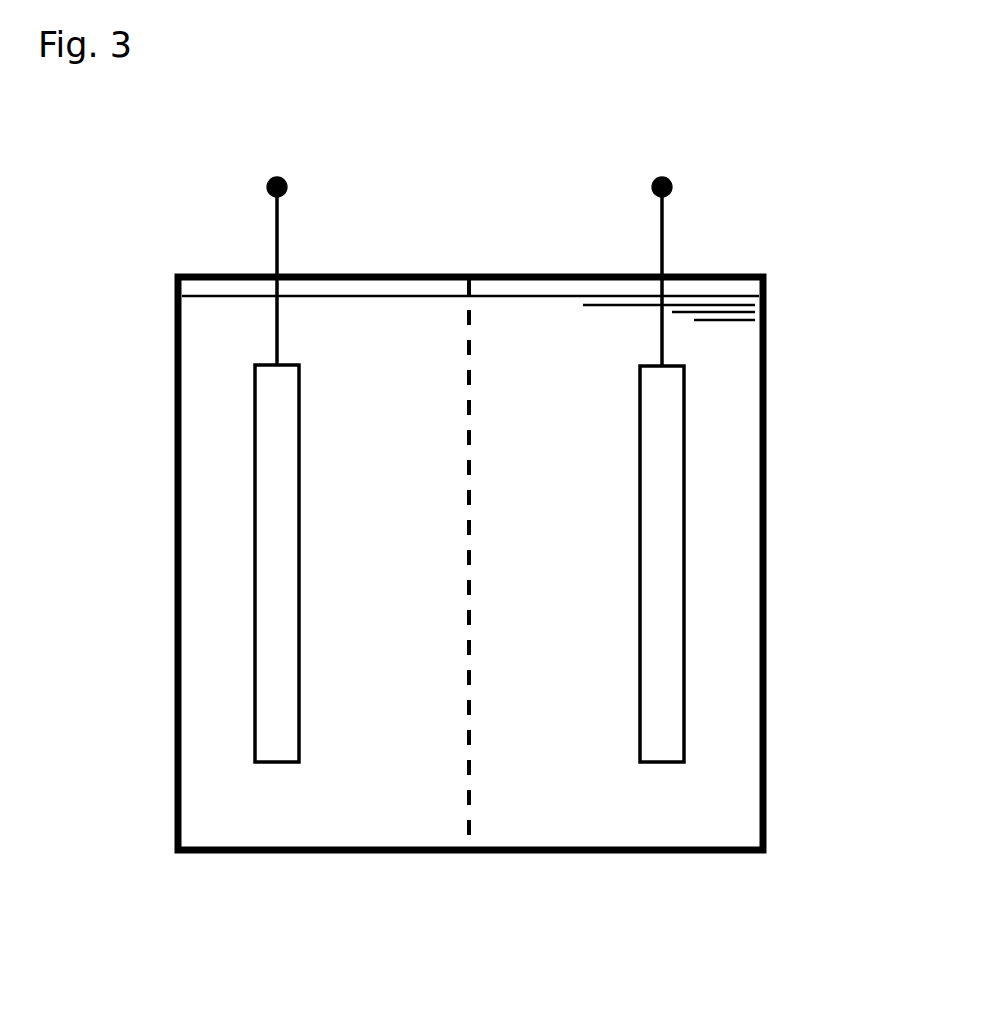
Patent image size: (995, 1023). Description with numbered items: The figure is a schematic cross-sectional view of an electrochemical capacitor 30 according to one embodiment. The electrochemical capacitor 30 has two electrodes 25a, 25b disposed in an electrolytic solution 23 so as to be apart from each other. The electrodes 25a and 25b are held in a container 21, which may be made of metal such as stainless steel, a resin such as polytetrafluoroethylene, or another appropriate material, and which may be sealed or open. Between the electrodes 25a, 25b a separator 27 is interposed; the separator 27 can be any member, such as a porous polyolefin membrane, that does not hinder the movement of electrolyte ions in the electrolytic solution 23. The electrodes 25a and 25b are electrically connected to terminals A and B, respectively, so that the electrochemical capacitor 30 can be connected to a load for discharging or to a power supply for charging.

The container 21 is at (520, 853).
The electrolytic solution 23 is at (547, 828).
The electrode 25a is at (277, 483).
The electrode 25b is at (673, 463).
The separator 27 is at (465, 740).
The electrochemical capacitor 30 is at (481, 543).